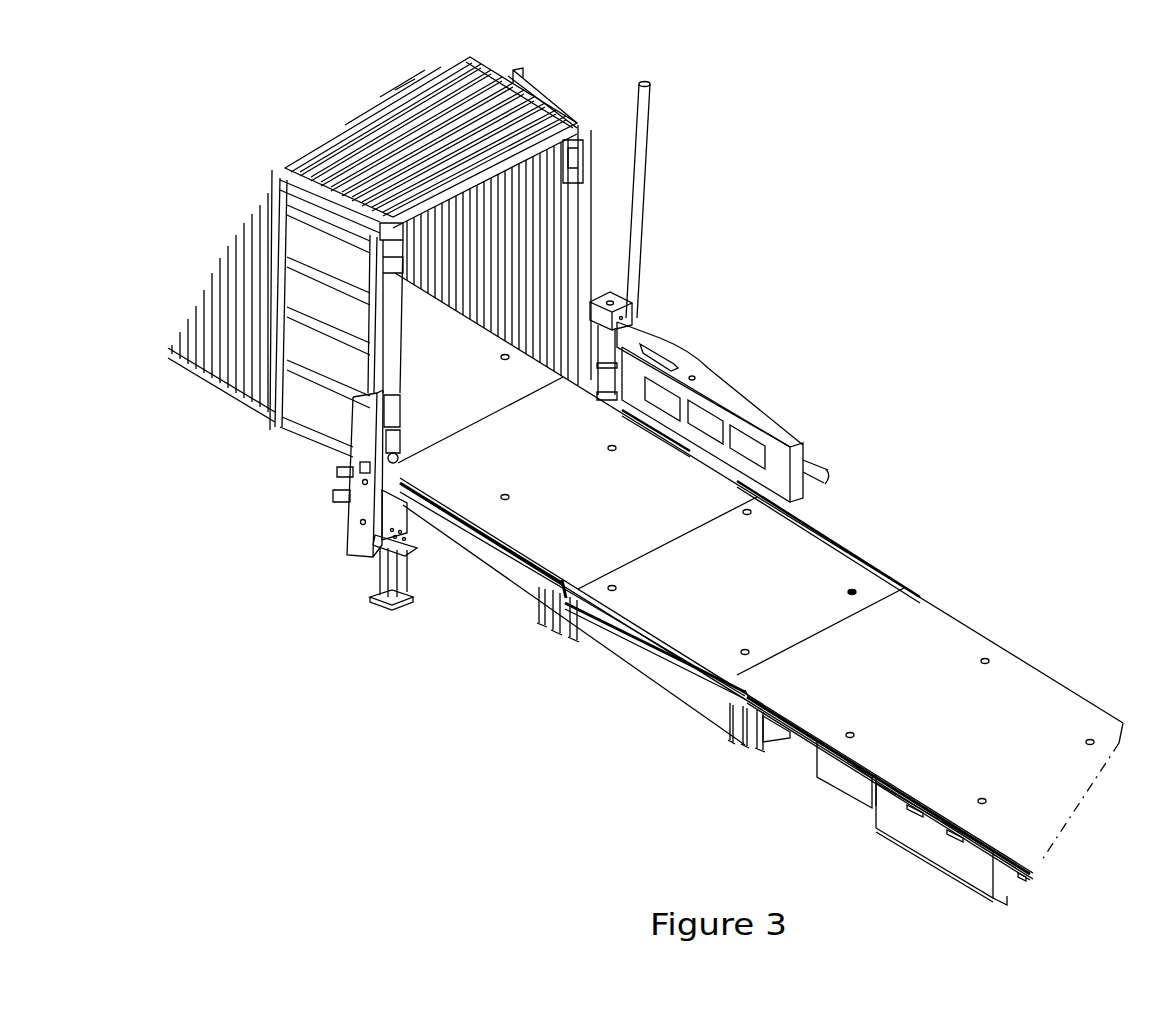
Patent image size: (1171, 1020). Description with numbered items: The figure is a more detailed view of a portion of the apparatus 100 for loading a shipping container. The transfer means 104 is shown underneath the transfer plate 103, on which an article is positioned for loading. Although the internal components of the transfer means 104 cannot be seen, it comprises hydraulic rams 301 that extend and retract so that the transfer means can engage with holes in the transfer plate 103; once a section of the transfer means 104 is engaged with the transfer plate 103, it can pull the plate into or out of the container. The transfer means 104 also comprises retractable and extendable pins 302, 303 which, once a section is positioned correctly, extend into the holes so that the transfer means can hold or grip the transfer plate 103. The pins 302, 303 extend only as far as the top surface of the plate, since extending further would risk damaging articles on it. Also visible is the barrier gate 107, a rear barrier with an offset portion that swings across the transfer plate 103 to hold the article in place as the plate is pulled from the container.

The apparatus for loading a shipping container 100 is at (1075, 390).
The transfer plate 103 is at (953, 653).
The transfer means 104 is at (500, 590).
The barrier gate 107 is at (670, 356).
The hydraulic rams 301 is at (680, 616).
The retractable and extendable pin 302 is at (858, 590).
The retractable and extendable pin 303 is at (745, 498).